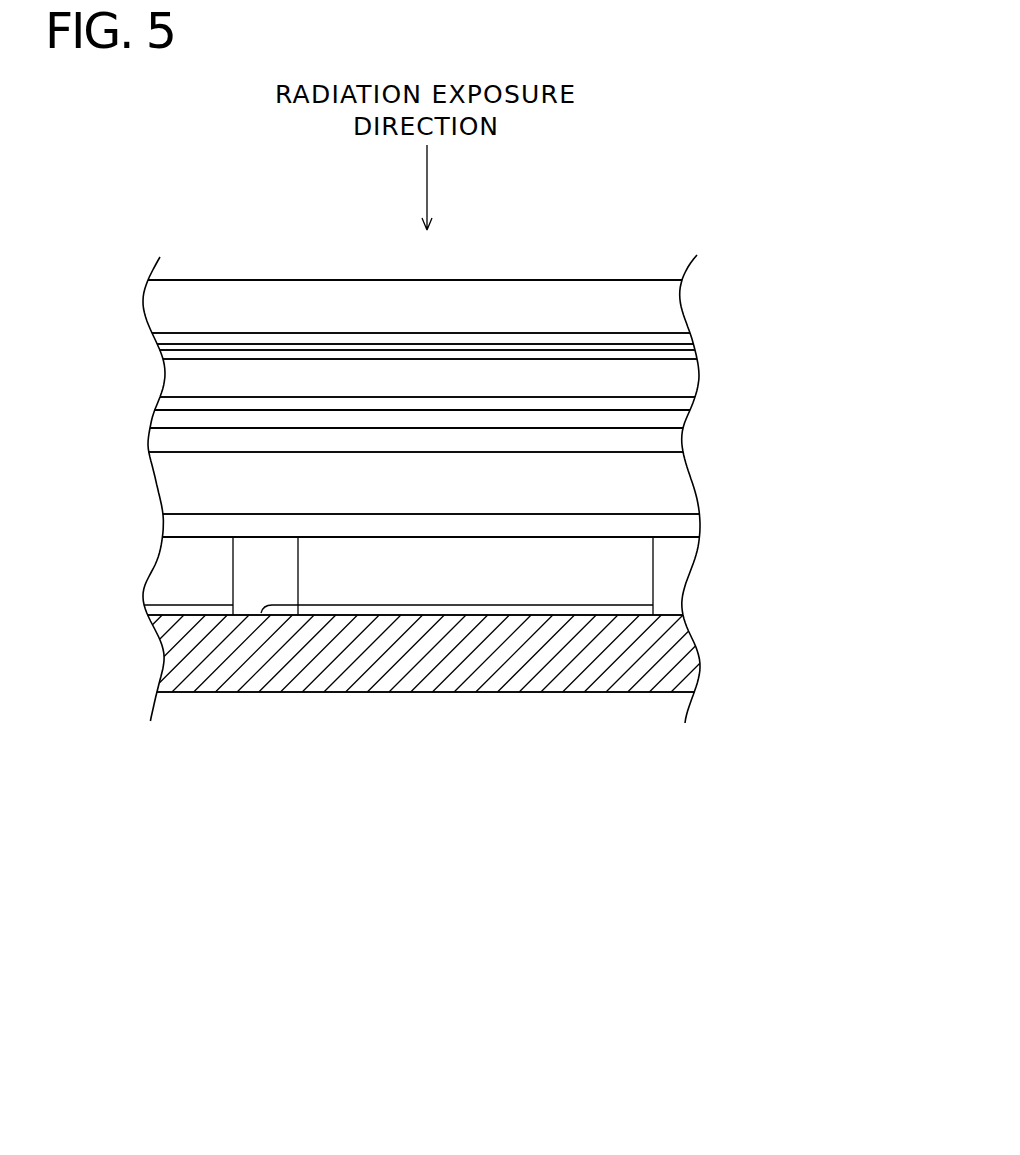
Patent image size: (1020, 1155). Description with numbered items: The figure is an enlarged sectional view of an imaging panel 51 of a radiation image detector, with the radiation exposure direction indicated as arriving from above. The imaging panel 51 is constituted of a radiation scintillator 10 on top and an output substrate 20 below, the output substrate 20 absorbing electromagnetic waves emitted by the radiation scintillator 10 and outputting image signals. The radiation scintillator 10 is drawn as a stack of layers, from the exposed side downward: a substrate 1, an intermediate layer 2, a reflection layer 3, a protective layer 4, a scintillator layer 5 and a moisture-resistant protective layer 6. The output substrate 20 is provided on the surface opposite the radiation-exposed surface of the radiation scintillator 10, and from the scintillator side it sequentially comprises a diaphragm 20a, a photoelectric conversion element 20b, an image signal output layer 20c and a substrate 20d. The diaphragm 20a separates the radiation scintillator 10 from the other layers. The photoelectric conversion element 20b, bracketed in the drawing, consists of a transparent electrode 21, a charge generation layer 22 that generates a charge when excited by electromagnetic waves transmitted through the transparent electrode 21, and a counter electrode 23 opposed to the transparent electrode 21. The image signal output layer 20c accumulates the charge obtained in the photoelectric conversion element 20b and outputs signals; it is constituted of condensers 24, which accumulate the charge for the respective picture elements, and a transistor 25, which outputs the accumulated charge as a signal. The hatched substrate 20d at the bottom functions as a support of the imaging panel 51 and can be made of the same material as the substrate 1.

The imaging panel 51 is at (577, 205).
The radiation scintillator 10 is at (105, 280).
The output substrate 20 is at (105, 402).
The substrate 1 is at (658, 312).
The intermediate layer 2 is at (689, 333).
The reflection layer 3 is at (693, 342).
The protective layer 4 is at (695, 353).
The scintillator layer 5 is at (688, 382).
The moisture-resistant protective layer 6 is at (678, 403).
The diaphragm 20a is at (680, 420).
The photoelectric conversion element 20b is at (797, 445).
The transparent electrode 21 is at (675, 443).
The charge generation layer 22 is at (673, 487).
The counter electrode 23 is at (678, 525).
The image signal output layer 20c is at (672, 577).
The condenser 24 is at (343, 611).
The transistor 25 is at (284, 607).
The substrate 20d is at (678, 652).